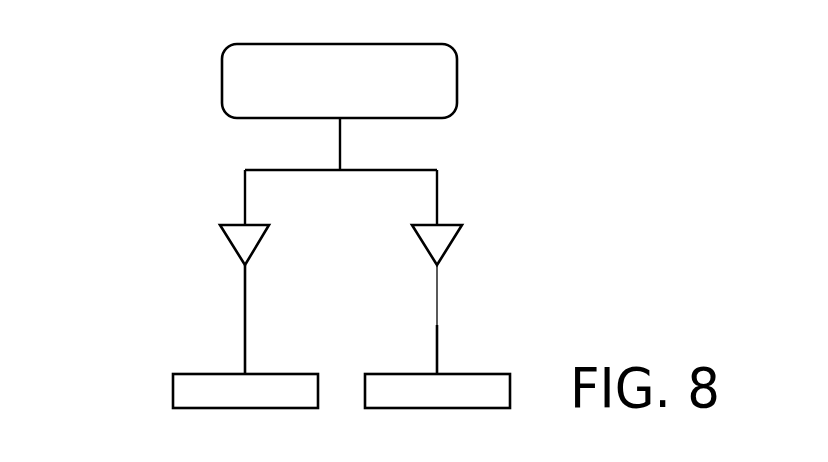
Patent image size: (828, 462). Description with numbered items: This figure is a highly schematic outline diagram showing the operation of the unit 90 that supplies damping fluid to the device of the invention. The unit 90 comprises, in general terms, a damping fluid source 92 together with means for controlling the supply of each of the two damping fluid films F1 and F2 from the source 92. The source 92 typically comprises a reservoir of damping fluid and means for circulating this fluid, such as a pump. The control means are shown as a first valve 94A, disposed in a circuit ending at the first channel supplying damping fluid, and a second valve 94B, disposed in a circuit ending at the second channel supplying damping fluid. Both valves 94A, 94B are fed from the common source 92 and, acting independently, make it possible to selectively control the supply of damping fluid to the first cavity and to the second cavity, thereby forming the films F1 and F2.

The unit supplying damping fluid 90 is at (115, 50).
The damping fluid source 92 is at (245, 78).
The first valve 94A is at (241, 245).
The second valve 94B is at (430, 238).
The first damping fluid film F1 is at (205, 382).
The second damping fluid film F2 is at (470, 377).